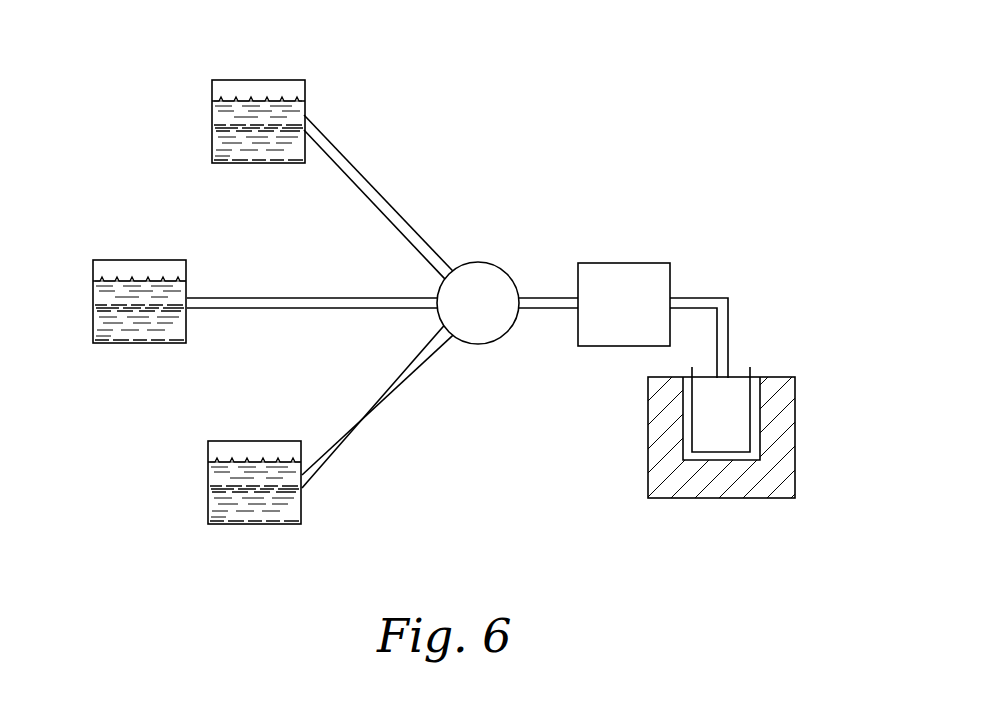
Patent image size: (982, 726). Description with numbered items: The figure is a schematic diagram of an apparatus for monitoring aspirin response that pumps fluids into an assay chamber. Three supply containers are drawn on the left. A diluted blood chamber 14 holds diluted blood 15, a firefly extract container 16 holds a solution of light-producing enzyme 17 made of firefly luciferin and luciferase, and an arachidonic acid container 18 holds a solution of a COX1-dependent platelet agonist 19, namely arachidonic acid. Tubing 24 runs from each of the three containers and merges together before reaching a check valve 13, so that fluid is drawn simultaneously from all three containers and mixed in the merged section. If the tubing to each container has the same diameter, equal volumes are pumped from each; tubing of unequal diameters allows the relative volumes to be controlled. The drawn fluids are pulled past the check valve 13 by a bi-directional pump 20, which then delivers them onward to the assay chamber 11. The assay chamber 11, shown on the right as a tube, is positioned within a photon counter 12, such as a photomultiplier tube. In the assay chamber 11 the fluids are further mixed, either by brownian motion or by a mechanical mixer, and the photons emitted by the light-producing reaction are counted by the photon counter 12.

The assay chamber 11 is at (750, 372).
The photon counter 12 is at (796, 427).
The check valve 13 is at (479, 262).
The diluted blood chamber 14 is at (212, 88).
The blood 15 is at (250, 104).
The firefly extract container 16 is at (93, 268).
The light-producing enzyme 17 is at (131, 284).
The arachidonic acid container 18 is at (208, 450).
The COX1-dependent platelet agonist 19 is at (246, 466).
The bi-directional pump 20 is at (623, 263).
The tubing 24 is at (311, 298).